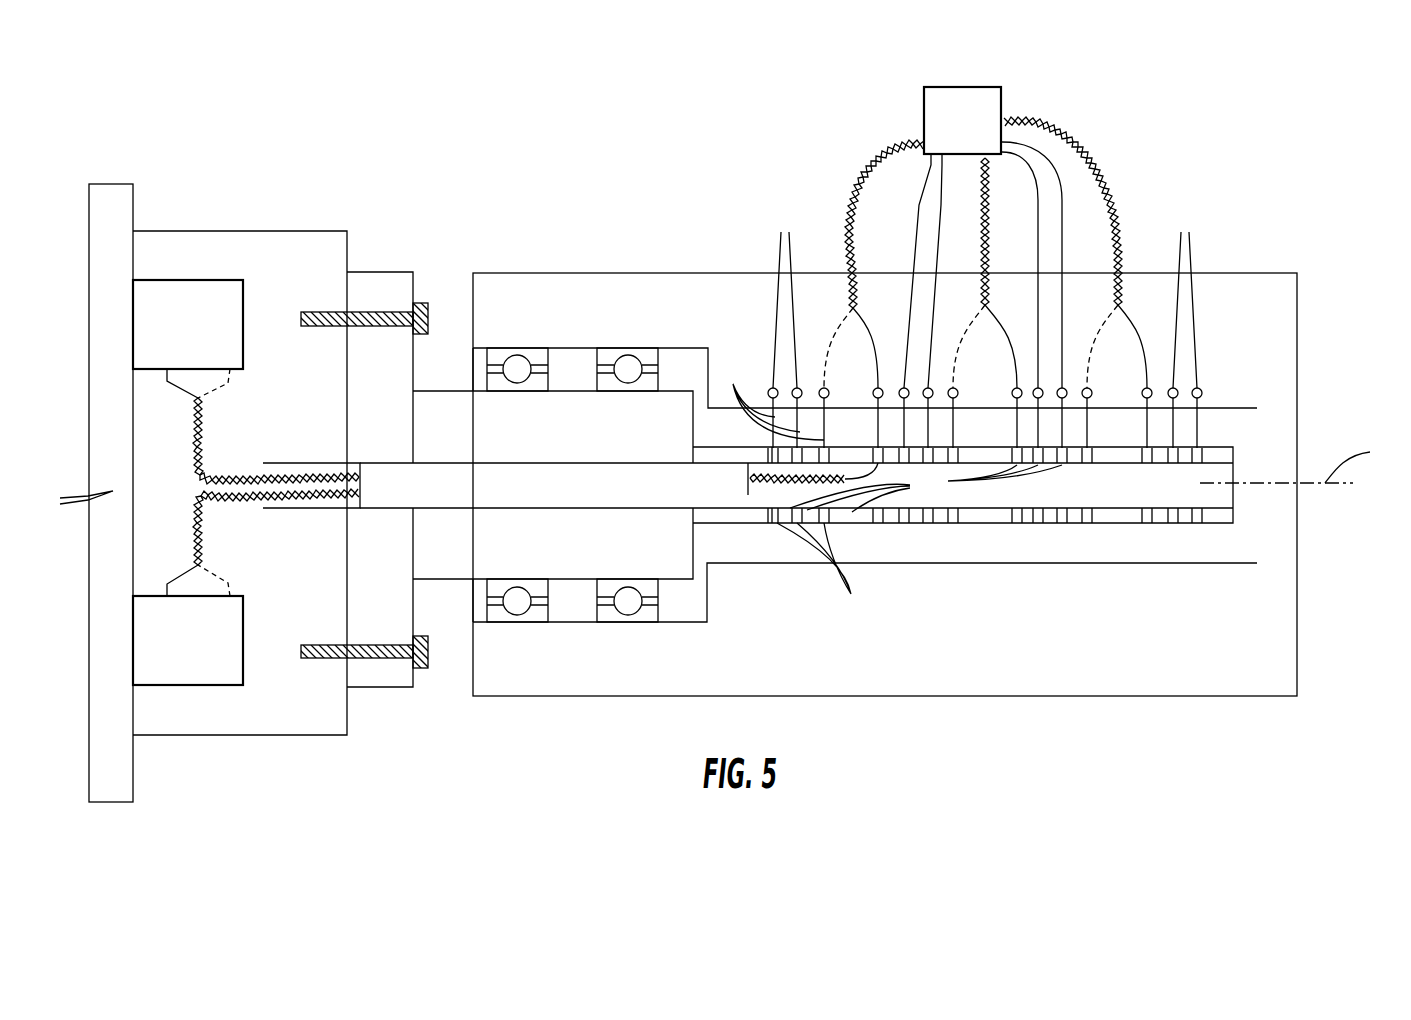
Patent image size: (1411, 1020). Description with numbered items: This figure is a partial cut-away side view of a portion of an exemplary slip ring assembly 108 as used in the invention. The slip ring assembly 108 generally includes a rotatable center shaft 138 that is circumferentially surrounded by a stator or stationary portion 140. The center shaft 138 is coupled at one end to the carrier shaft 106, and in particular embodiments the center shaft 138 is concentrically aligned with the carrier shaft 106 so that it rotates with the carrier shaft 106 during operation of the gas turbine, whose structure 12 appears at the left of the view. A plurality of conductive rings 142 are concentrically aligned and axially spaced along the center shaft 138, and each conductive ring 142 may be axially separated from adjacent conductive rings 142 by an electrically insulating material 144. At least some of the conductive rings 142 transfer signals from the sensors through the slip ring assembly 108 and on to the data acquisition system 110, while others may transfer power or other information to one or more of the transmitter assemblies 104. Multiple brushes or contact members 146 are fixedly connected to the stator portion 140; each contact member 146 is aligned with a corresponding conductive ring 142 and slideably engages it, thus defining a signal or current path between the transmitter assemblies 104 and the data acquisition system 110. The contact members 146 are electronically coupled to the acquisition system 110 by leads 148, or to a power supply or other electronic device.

The wall / support structure 12 is at (112, 807).
The transmitter assemblies 104 is at (208, 320).
The carrier shaft 106 is at (245, 738).
The slip ring assembly 108 is at (1207, 149).
The data acquisition system 110 is at (978, 133).
The center shaft 138 is at (1237, 472).
The stator portion 140 is at (1288, 343).
The conductive rings 142 is at (822, 576).
The electrically insulating material 144 is at (926, 488).
The contact members 146 is at (768, 396).
The twisted wire pairs 148 is at (838, 216).